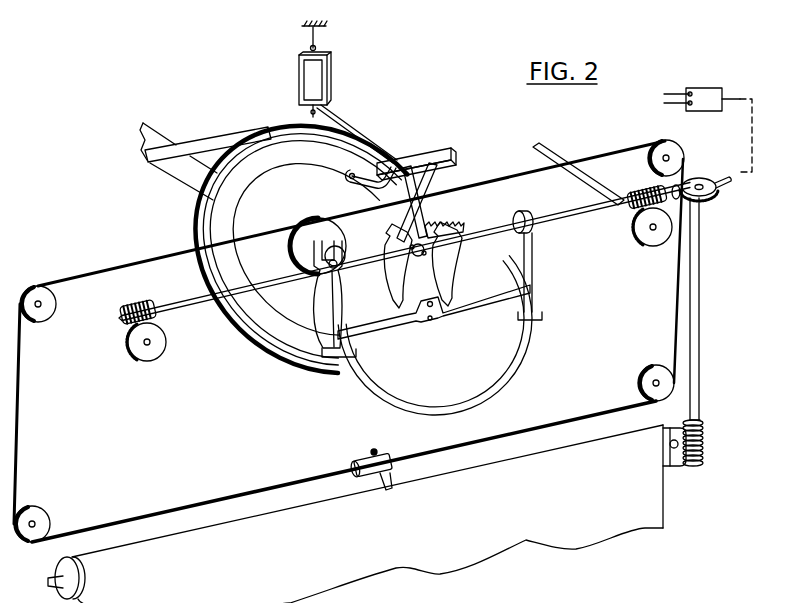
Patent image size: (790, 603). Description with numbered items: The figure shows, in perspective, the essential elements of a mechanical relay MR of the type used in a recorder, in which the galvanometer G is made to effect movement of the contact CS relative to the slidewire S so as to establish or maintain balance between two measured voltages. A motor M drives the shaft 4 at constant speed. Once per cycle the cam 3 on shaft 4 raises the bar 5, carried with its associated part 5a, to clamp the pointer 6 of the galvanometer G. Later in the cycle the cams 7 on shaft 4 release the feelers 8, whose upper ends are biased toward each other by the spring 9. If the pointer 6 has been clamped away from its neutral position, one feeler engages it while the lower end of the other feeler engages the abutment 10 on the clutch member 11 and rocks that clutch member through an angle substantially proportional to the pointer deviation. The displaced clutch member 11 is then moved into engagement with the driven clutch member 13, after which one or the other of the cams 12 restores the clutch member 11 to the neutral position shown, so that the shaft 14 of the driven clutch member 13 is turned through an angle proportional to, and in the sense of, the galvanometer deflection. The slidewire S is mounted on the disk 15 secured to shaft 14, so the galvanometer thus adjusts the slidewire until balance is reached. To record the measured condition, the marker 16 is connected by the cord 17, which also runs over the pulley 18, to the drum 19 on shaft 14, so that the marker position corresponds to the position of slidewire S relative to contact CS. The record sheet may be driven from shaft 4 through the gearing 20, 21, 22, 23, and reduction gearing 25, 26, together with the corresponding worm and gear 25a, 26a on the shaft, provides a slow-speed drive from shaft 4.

The contact CS is at (240, 133).
The shaft 14 is at (192, 172).
The slidewire S is at (198, 222).
The drum 19 is at (293, 258).
The disk 15 is at (258, 318).
The driven clutch member 13 is at (375, 386).
The cord 17 is at (19, 452).
The pulley 18 is at (678, 152).
The marker 16 is at (395, 460).
The worm 25a is at (135, 304).
The worm gear 26a is at (156, 358).
The reduction gearing 25 is at (643, 190).
The reduction gearing 26 is at (652, 246).
The shaft 4 is at (552, 220).
The cams 12 is at (324, 313).
The clutch member 11 is at (462, 316).
The abutment 10 is at (433, 312).
The cam 3 is at (420, 246).
The cams 7 is at (395, 274).
The feelers 8 is at (403, 200).
The spring 9 is at (457, 222).
The bar 5 is at (362, 181).
The plate 5a is at (450, 160).
The pointer 6 is at (363, 140).
The galvanometer G is at (328, 78).
The mechanism MR is at (448, 125).
The motor M is at (705, 88).
The gearing 23 is at (702, 180).
The gearing 22 is at (714, 198).
The gearing 21 is at (703, 458).
The gearing 20 is at (675, 460).